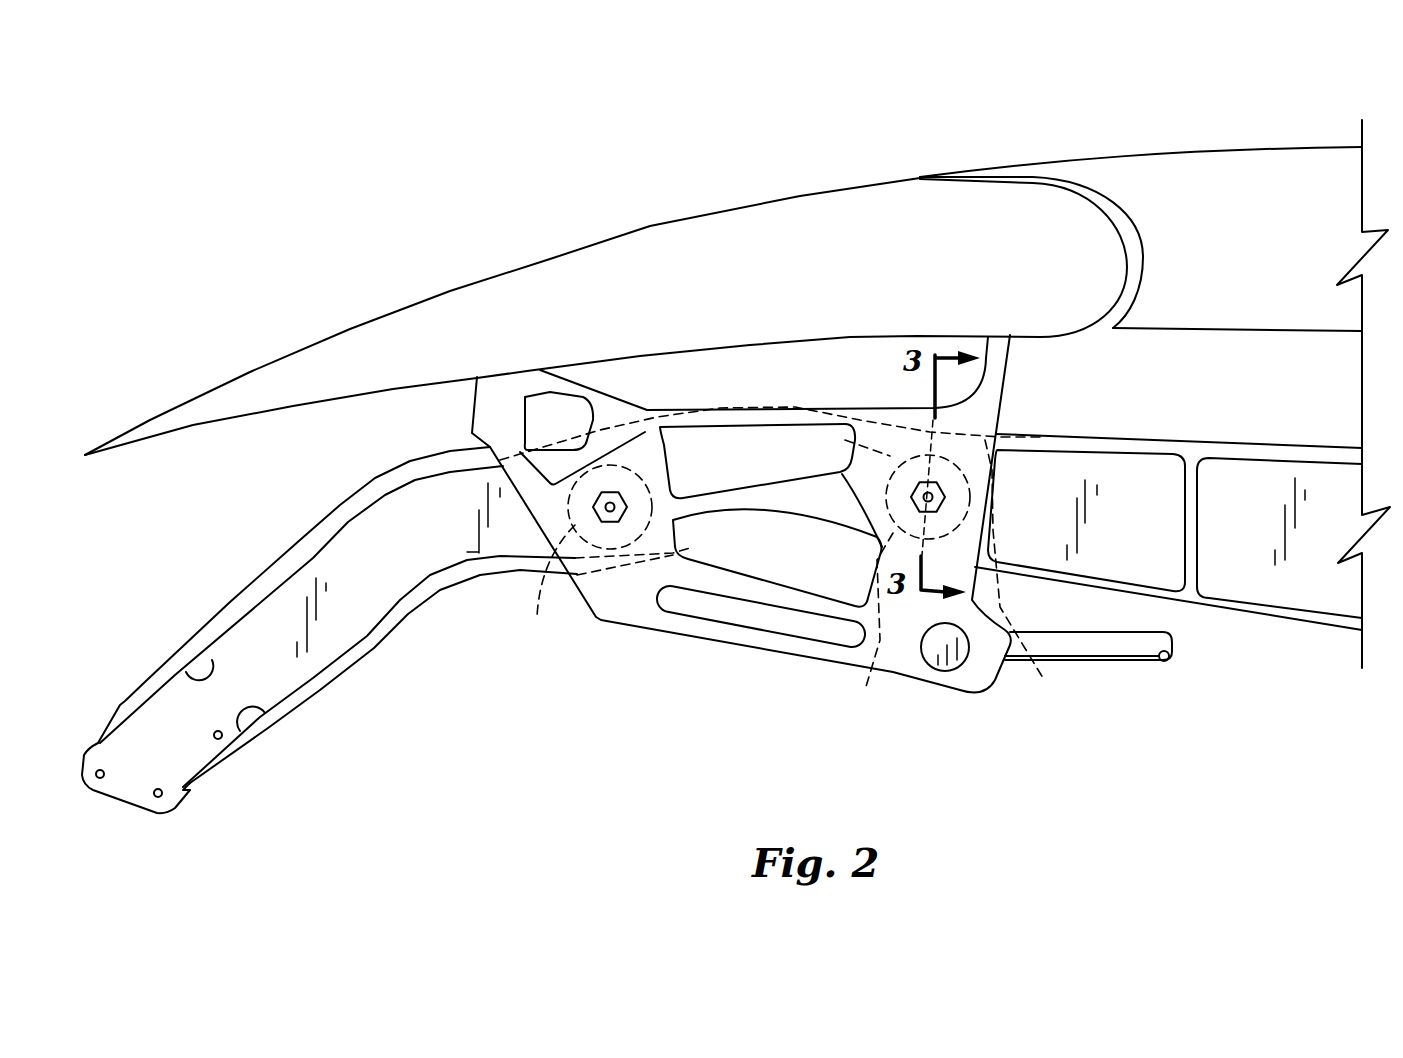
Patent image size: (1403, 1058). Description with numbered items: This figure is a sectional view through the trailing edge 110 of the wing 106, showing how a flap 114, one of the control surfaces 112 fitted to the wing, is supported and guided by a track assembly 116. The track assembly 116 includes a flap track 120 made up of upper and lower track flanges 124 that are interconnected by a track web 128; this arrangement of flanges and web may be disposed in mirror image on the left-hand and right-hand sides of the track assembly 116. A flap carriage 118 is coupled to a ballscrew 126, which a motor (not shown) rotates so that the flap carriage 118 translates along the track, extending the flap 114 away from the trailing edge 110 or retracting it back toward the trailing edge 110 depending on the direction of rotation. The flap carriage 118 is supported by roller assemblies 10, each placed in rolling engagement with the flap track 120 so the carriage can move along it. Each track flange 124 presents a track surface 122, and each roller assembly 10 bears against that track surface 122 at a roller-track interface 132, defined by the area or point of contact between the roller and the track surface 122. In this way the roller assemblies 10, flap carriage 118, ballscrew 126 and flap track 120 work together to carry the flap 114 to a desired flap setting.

The roller assembly 10 is at (771, 563).
The wing 106 is at (1155, 378).
The trailing edge 110 is at (1262, 167).
The control surface 112 is at (614, 316).
The flap 114 is at (400, 327).
The track assembly 116 is at (741, 558).
The flap carriage 118 is at (667, 630).
The flap track 120 is at (329, 630).
The track surface 122 is at (213, 653).
The track flange 124 is at (268, 580).
The ballscrew 126 is at (1112, 656).
The track web 128 is at (393, 572).
The roller-track interface 132 is at (627, 550).